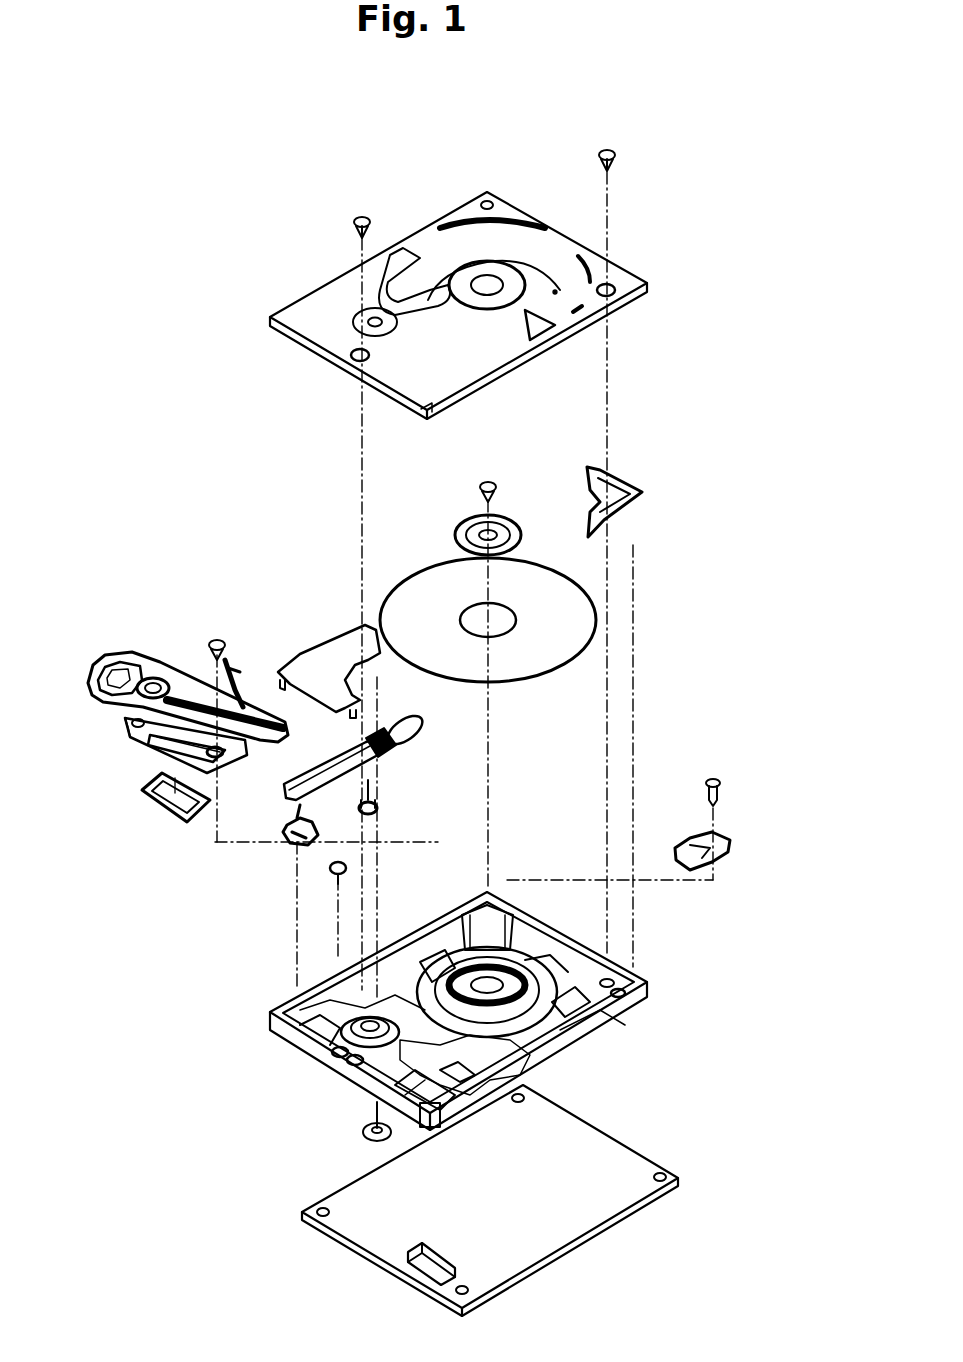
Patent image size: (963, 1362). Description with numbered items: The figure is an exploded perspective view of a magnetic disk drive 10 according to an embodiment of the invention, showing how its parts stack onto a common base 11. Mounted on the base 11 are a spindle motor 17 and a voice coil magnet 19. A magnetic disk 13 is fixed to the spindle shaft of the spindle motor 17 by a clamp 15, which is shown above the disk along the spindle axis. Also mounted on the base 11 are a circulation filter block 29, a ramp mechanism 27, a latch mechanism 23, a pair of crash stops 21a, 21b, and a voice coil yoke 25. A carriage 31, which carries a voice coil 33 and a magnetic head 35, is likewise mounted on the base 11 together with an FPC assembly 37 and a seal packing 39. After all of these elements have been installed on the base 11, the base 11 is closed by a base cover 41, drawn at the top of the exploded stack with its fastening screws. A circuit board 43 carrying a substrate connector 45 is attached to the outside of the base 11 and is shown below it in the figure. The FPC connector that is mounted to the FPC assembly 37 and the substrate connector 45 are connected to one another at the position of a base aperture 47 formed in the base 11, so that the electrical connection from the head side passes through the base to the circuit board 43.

The magnetic disk drive 10 is at (110, 469).
The base 11 is at (431, 1016).
The magnetic disk 13 is at (535, 680).
The clamp 15 is at (498, 525).
The spindle motor 17 is at (533, 970).
The voice coil magnet 19 is at (270, 1038).
The crash stop 21a is at (377, 810).
The crash stop 21b is at (332, 867).
The latch mechanism 23 is at (376, 815).
The voice coil yoke 25 is at (328, 640).
The ramp mechanism 27 is at (727, 837).
The circulation filter block 29 is at (638, 484).
The carriage 31 is at (159, 716).
The voice coil 33 is at (107, 665).
The magnetic head 35 is at (270, 740).
The FPC assembly 37 is at (110, 747).
The seal packing 39 is at (152, 807).
The base cover 41 is at (622, 262).
The circuit board 43 is at (490, 1200).
The substrate connector 45 is at (437, 1252).
The base aperture 47 is at (407, 1080).